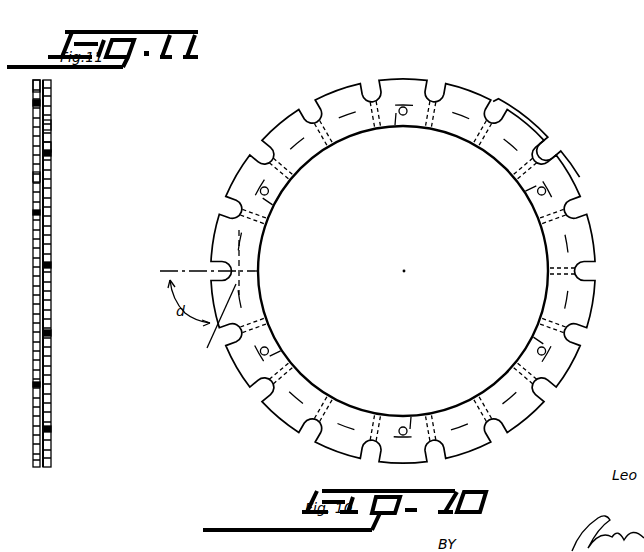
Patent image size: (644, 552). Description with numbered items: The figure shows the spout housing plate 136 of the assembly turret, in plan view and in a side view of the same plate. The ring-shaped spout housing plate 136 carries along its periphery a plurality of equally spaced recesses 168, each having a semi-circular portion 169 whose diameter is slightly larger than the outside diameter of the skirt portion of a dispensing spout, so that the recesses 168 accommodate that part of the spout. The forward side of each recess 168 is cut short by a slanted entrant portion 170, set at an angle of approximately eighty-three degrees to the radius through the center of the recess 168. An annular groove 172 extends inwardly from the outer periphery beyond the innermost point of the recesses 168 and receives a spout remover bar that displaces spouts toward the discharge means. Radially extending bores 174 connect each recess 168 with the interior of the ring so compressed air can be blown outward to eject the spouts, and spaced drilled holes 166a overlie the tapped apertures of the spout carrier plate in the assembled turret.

In FIG. 11, the spout housing plate 136 is at (64, 267).
In FIG. 10, the spout housing plate 136 is at (553, 352).
In FIG. 10, the drilled holes 166a is at (268, 194).
In FIG. 11, the recesses 168 is at (50, 153).
In FIG. 10, the recesses 168 is at (546, 147).
In FIG. 10, the semi-circular portion 169 is at (434, 94).
In FIG. 11, the slanted entrant portion 170 is at (50, 178).
In FIG. 10, the slanted entrant portion 170 is at (213, 298).
In FIG. 11, the annular groove 172 is at (53, 88).
In FIG. 10, the annular groove 172 is at (294, 117).
In FIG. 11, the radially extending bores 174 is at (50, 128).
In FIG. 10, the radially extending bores 174 is at (262, 234).